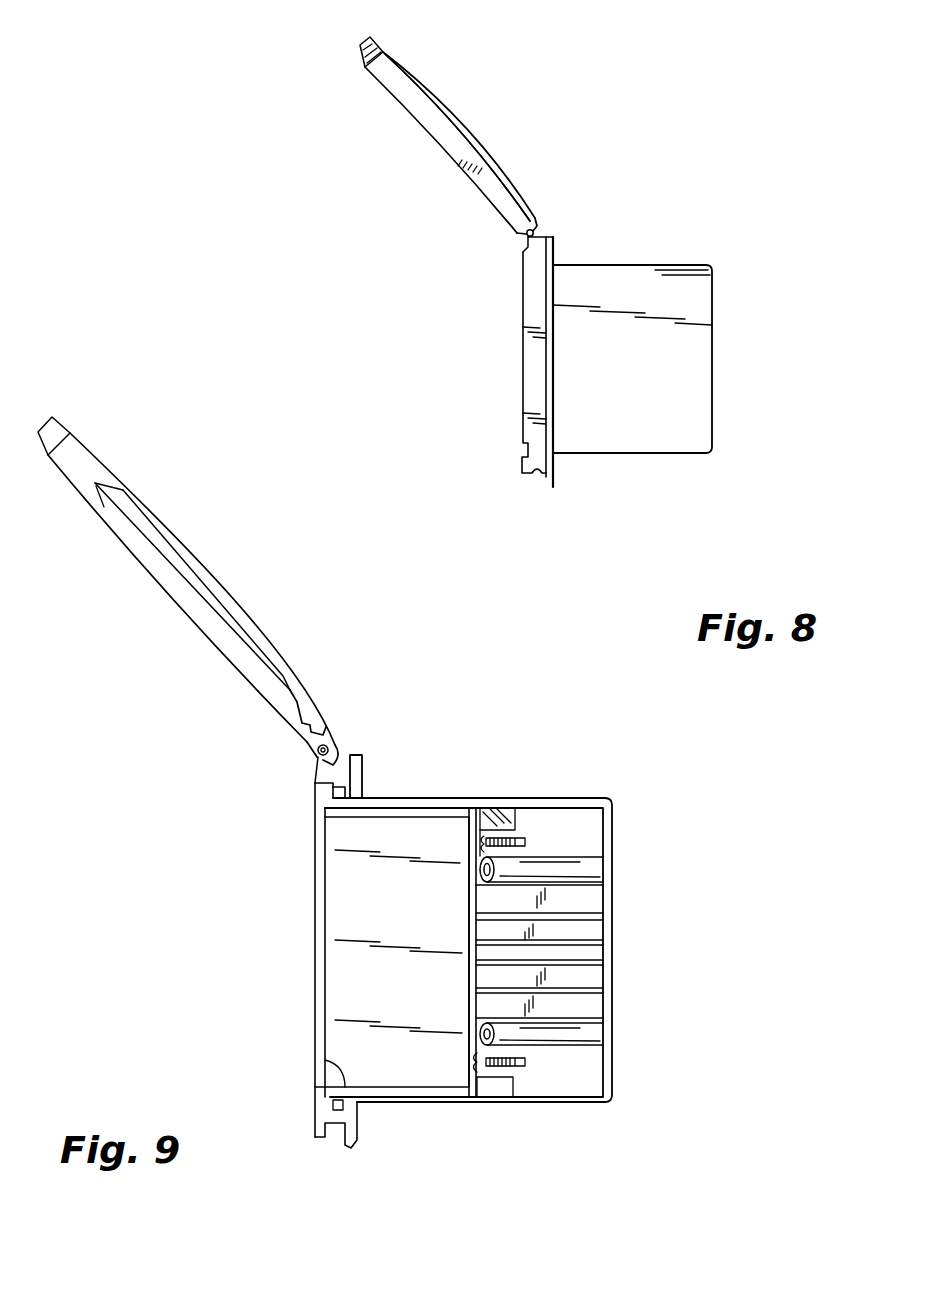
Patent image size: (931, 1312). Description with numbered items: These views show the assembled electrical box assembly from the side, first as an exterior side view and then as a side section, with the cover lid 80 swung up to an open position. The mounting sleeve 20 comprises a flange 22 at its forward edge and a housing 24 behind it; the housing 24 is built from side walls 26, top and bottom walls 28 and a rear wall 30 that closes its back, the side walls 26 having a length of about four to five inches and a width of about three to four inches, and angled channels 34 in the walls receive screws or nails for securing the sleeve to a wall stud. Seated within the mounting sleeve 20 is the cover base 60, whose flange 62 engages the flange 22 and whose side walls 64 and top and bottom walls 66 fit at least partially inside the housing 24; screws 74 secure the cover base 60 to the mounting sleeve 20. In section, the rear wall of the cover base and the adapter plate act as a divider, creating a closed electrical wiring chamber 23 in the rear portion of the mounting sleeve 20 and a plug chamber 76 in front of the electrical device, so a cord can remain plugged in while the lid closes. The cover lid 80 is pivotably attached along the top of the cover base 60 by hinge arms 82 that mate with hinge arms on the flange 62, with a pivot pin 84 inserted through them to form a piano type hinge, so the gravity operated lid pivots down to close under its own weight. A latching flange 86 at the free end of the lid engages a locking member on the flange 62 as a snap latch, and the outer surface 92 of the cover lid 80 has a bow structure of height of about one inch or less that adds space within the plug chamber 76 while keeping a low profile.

In FIG. 8, the mounting sleeve 20 is at (660, 250).
In FIG. 8, the flange 22 is at (573, 379).
In FIG. 9, the flange 22 is at (349, 1152).
In FIG. 9, the electrical wiring chamber 23 is at (590, 1003).
In FIG. 8, the housing 24 is at (707, 258).
In FIG. 9, the housing 24 is at (610, 800).
In FIG. 8, the side walls 26 is at (640, 376).
In FIG. 9, the side walls 26 is at (572, 1091).
In FIG. 8, the top and bottom walls 28 is at (622, 265).
In FIG. 9, the top and bottom walls 28 is at (568, 798).
In FIG. 8, the rear wall 30 is at (713, 372).
In FIG. 9, the rear wall 30 is at (614, 942).
In FIG. 9, the angled channels 34 is at (601, 869).
In FIG. 8, the cover base 60 is at (513, 343).
In FIG. 9, the cover base 60 is at (311, 936).
In FIG. 9, the flange 62 is at (316, 1140).
In FIG. 9, the side walls 64 is at (407, 906).
In FIG. 9, the top and bottom walls 66 is at (408, 798).
In FIG. 9, the screws 74 is at (498, 838).
In FIG. 9, the plug chamber 76 is at (343, 872).
In FIG. 8, the cover lid 80 is at (400, 115).
In FIG. 9, the cover lid 80 is at (162, 597).
In FIG. 8, the hinge arms 82 is at (537, 224).
In FIG. 8, the pivot pin 84 is at (528, 237).
In FIG. 9, the pivot pin 84 is at (317, 757).
In FIG. 8, the latching flange 86 is at (361, 42).
In FIG. 8, the outer surface 92 is at (443, 104).
In FIG. 9, the outer surface 92 is at (216, 569).